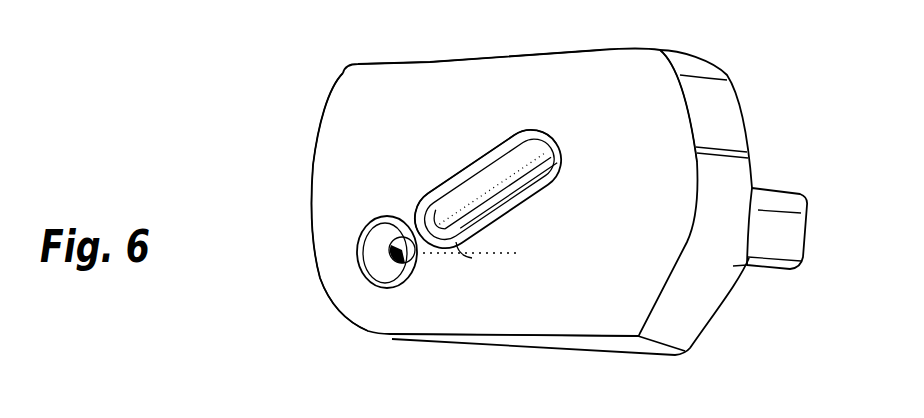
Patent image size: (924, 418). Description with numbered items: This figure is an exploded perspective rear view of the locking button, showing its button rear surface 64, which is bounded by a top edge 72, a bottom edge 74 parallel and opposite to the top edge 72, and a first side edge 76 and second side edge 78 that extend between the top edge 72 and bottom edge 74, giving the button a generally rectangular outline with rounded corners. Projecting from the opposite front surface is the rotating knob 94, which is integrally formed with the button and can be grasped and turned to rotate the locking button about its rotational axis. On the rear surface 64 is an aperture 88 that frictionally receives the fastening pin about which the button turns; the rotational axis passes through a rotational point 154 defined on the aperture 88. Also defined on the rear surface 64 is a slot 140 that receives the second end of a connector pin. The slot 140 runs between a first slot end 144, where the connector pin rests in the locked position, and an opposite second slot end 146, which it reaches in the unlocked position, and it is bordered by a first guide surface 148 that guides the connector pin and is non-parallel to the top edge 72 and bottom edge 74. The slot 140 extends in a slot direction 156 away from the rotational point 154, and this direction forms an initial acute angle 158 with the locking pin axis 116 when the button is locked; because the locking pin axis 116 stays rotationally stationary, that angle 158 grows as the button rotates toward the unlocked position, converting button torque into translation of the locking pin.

The button rear surface 64 is at (472, 90).
The top edge 72 is at (425, 62).
The bottom edge 74 is at (445, 340).
The first side edge 76 is at (310, 195).
The second side edge 78 is at (687, 107).
The aperture 88 is at (375, 288).
The rotating knob 94 is at (805, 200).
The locking pin axis 116 is at (490, 250).
The slot 140 is at (498, 123).
The first slot end 144 is at (545, 146).
The second slot end 146 is at (420, 205).
The first guide surface 148 is at (482, 177).
The rotational point 154 is at (390, 240).
The slot direction 156 is at (517, 187).
The initial acute angle 158 is at (478, 250).